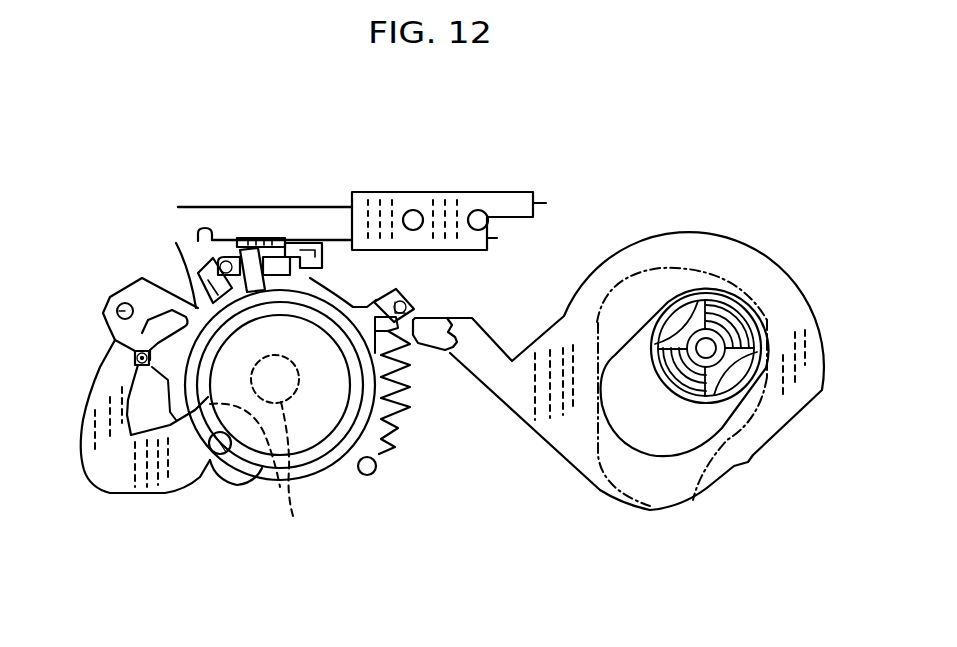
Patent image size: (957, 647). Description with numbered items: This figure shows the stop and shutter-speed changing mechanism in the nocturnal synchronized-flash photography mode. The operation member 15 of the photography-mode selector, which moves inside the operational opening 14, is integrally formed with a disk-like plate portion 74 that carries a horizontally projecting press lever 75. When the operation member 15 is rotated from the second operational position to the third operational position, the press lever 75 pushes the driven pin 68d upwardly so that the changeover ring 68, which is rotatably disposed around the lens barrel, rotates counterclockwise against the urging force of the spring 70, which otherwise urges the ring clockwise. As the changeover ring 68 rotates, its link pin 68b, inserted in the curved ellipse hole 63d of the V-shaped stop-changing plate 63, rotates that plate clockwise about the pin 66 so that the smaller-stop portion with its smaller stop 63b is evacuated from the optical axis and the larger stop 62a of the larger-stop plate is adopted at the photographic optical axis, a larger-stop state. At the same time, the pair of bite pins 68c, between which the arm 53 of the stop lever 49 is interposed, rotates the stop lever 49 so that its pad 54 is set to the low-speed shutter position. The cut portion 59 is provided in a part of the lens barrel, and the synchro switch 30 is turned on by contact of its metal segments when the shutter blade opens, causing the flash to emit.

The operational opening 14 is at (595, 322).
The operation member 15 is at (683, 437).
The synchro switch 30 is at (436, 190).
The stop lever 49 is at (263, 238).
The arm 53 is at (232, 256).
The pad 54 is at (318, 247).
The cut portion 59 is at (260, 466).
The larger stop 62a is at (261, 475).
The stop-changing plate 63 is at (105, 491).
The smaller stop 63b is at (198, 480).
The curved ellipse hole 63d is at (157, 327).
The pin 66 is at (104, 303).
The changeover ring 68 is at (322, 474).
The link pin 68b is at (135, 358).
The bite pins 68c is at (220, 258).
The driven pin 68d is at (413, 304).
The spring 70 is at (388, 440).
The plate portion 74 is at (752, 450).
The press lever 75 is at (423, 346).